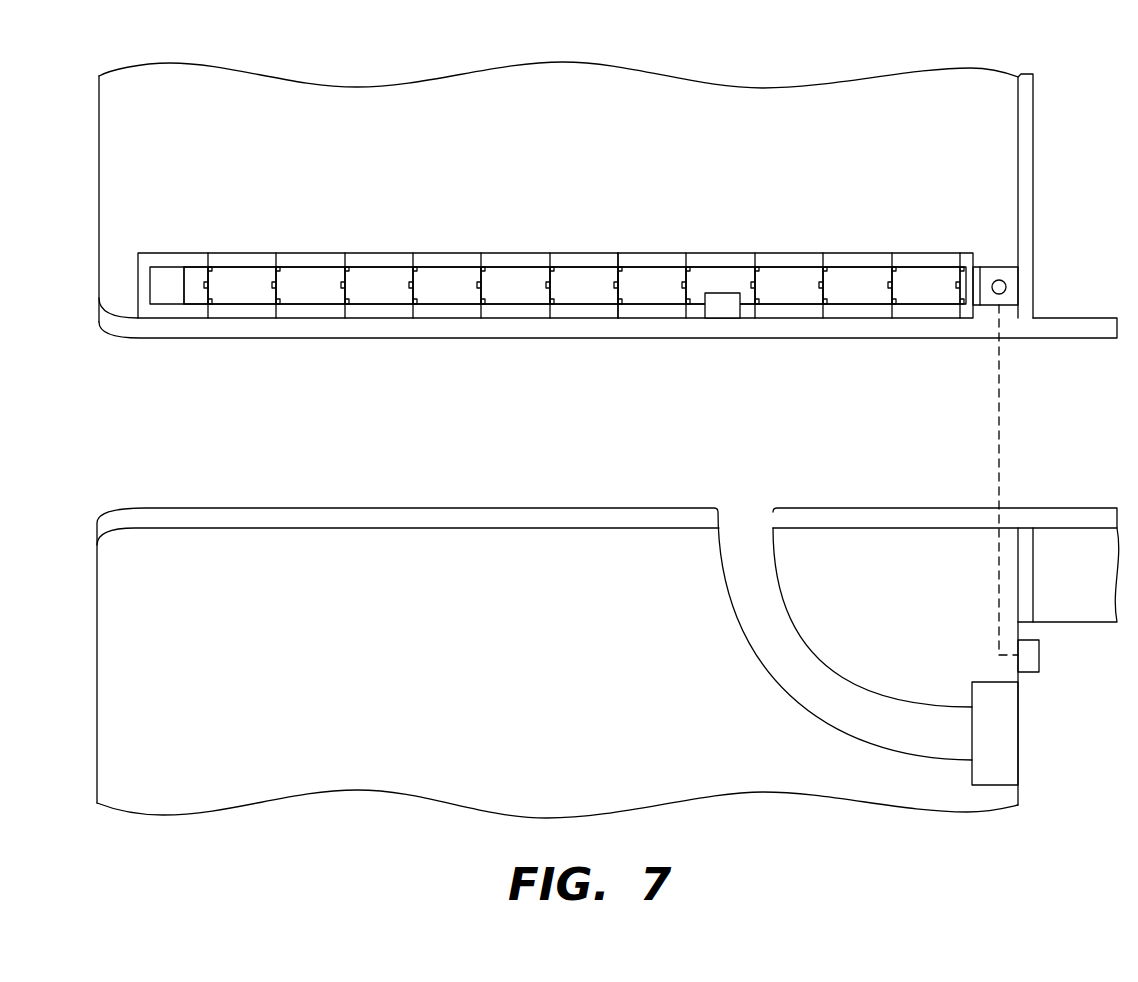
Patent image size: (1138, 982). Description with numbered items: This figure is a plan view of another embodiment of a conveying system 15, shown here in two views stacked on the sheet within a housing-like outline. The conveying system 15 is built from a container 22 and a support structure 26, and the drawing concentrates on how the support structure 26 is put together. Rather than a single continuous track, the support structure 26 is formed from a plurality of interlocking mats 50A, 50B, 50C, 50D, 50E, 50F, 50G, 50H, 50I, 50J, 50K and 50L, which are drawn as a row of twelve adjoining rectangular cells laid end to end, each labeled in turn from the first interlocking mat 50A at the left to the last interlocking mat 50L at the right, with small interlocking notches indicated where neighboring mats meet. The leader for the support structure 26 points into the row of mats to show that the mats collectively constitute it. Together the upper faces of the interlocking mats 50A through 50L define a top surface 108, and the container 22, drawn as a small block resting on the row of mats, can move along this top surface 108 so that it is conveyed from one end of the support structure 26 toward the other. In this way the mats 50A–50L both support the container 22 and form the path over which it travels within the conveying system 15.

The conveying system 15 is at (926, 73).
The container 22 is at (720, 310).
The support structure 26 is at (640, 279).
The top surface 108 is at (582, 297).
The interlocking mat 50A is at (193, 275).
The interlocking mat 50B is at (262, 275).
The interlocking mat 50C is at (330, 275).
The interlocking mat 50D is at (398, 275).
The interlocking mat 50E is at (467, 275).
The interlocking mat 50F is at (534, 275).
The interlocking mat 50G is at (603, 275).
The interlocking mat 50H is at (672, 275).
The interlocking mat 50I is at (740, 275).
The interlocking mat 50J is at (807, 275).
The interlocking mat 50K is at (875, 275).
The interlocking mat 50L is at (943, 275).